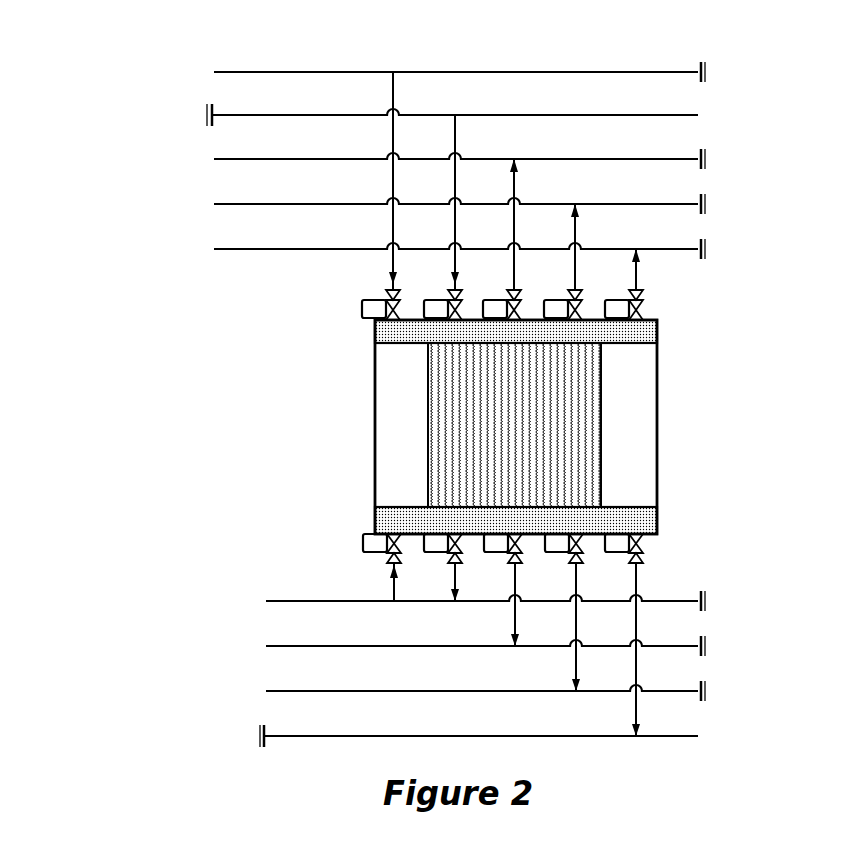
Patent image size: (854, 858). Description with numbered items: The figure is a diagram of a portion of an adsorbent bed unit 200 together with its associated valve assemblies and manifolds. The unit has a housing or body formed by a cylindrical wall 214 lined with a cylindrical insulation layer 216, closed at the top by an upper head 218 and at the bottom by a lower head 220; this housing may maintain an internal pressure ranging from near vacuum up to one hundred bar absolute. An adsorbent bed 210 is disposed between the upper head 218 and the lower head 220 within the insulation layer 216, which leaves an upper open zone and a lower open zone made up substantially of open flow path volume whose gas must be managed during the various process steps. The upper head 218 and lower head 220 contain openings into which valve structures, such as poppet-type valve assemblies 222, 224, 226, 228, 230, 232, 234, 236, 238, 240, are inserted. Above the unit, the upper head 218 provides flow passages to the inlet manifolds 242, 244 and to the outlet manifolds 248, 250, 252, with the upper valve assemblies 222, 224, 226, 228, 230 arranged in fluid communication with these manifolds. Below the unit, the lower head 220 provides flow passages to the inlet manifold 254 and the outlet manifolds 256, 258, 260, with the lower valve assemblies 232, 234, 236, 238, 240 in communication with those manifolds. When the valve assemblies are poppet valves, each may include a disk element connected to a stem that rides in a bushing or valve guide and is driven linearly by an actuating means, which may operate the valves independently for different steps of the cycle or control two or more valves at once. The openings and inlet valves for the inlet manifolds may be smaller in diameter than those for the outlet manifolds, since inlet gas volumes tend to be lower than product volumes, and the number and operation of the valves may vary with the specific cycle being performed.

The adsorbent bed unit portion 200 is at (186, 33).
The adsorbent bed 210 is at (445, 428).
The cylindrical wall 214 is at (658, 437).
The cylindrical insulation layer 216 is at (387, 390).
The upper head 218 is at (658, 331).
The lower head 220 is at (658, 520).
The valve assembly 222 is at (420, 286).
The valve assembly 224 is at (482, 286).
The valve assembly 226 is at (541, 286).
The valve assembly 228 is at (602, 286).
The valve assembly 230 is at (663, 286).
The valve assembly 232 is at (402, 556).
The valve assembly 234 is at (463, 556).
The valve assembly 236 is at (523, 556).
The valve assembly 238 is at (584, 556).
The valve assembly 240 is at (644, 556).
The inlet manifold 242 is at (309, 71).
The inlet manifold 244 is at (309, 114).
The outlet manifold 248 is at (309, 158).
The outlet manifold 250 is at (309, 203).
The outlet manifold 252 is at (309, 248).
The inlet manifold 254 is at (344, 600).
The outlet manifold 256 is at (344, 645).
The outlet manifold 258 is at (344, 690).
The outlet manifold 260 is at (344, 735).